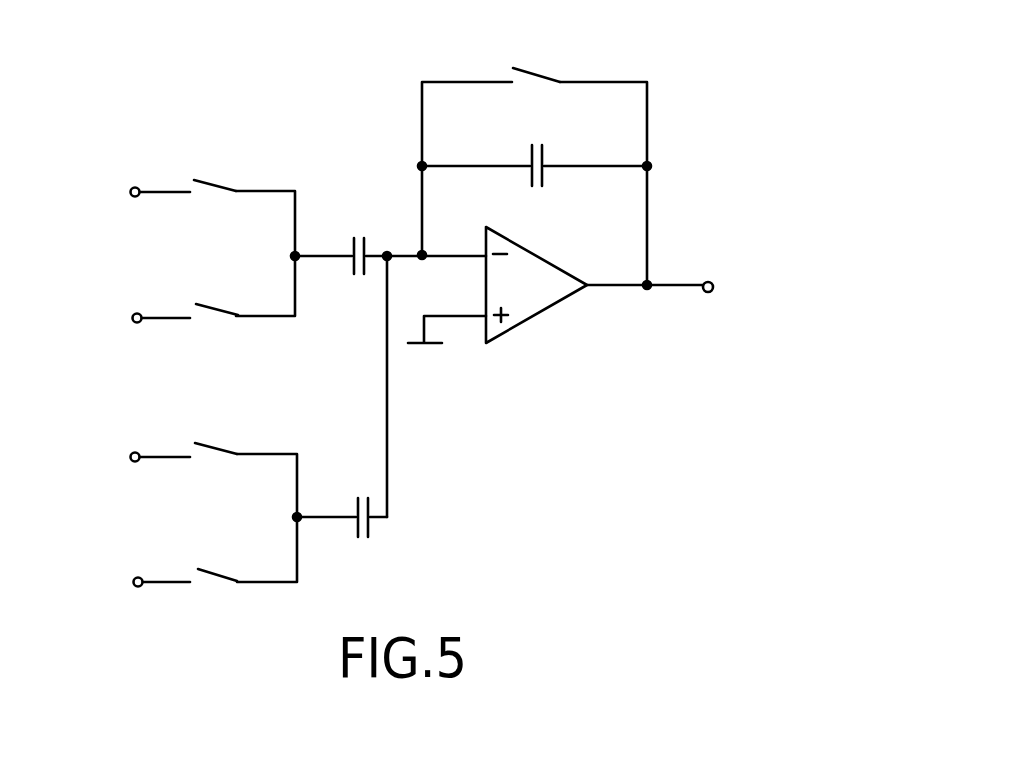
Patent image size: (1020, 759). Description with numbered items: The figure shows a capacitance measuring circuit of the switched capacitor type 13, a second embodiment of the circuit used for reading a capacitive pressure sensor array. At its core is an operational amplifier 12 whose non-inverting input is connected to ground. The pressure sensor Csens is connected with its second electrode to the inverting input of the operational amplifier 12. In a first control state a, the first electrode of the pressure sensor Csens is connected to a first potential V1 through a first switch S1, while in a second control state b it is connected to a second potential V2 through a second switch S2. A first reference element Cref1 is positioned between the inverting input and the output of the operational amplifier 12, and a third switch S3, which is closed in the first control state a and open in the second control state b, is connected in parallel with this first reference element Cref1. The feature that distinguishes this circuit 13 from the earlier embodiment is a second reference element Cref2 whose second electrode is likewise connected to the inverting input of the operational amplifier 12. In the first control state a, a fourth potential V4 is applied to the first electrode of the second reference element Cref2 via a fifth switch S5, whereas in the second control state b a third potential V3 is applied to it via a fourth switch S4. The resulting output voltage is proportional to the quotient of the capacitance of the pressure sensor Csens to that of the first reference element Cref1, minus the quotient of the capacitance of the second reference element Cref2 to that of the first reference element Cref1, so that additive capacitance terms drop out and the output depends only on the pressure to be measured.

The operational amplifier 12 is at (537, 314).
The capacitance measuring circuit of the switched capacitor type 13 is at (612, 149).
The first switch S1 is at (215, 181).
The second switch S2 is at (215, 309).
The third switch S3 is at (540, 70).
The fourth switch S4 is at (215, 449).
The fifth switch S5 is at (212, 571).
The first potential V1 is at (138, 198).
The second potential V2 is at (139, 324).
The third potential V3 is at (139, 461).
The fourth potential V4 is at (140, 589).
The pressure sensor Csens is at (367, 238).
The first reference element Cref1 is at (566, 144).
The second reference element Cref2 is at (351, 499).